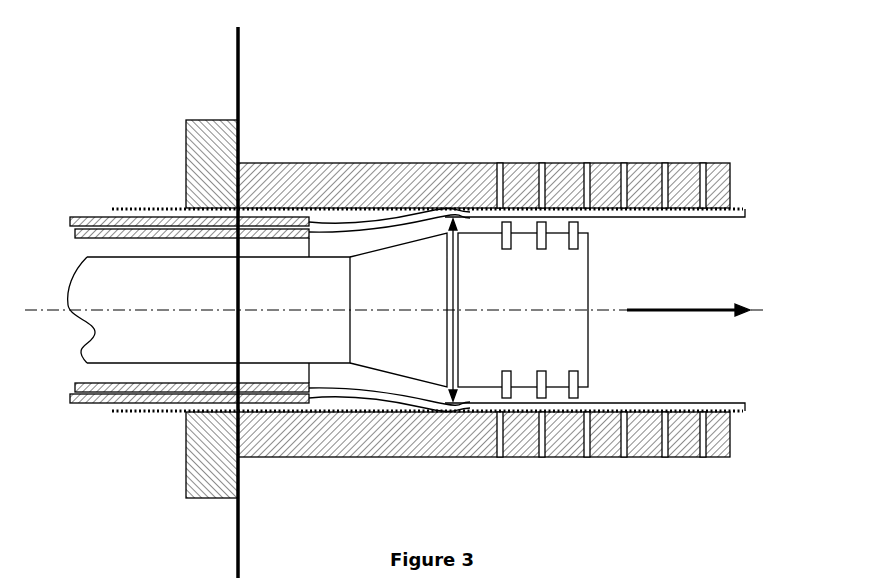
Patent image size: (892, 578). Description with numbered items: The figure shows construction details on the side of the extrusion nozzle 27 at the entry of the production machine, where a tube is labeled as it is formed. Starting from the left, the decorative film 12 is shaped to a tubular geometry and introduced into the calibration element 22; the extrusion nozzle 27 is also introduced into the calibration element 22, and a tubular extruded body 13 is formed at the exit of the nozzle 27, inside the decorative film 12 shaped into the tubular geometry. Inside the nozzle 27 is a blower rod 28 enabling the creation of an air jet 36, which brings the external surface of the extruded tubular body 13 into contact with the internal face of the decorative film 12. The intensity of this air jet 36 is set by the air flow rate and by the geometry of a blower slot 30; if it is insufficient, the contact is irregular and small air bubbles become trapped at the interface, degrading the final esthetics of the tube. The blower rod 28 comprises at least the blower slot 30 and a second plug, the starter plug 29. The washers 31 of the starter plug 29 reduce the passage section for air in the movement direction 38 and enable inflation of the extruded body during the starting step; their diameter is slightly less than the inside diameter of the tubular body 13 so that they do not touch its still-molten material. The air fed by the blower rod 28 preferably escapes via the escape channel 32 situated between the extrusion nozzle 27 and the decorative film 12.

The decorative film 12 is at (122, 206).
The tubular extruded body 13 is at (324, 230).
The calibration element 22 is at (447, 187).
The extrusion nozzle 27 is at (90, 217).
The blower rod 28 is at (283, 337).
The starter plug 29 is at (553, 220).
The blower slot 30 is at (456, 360).
The washers 31 is at (573, 403).
The escape channel 32 is at (160, 370).
The air jet 36 is at (458, 222).
The movement direction 38 is at (715, 312).